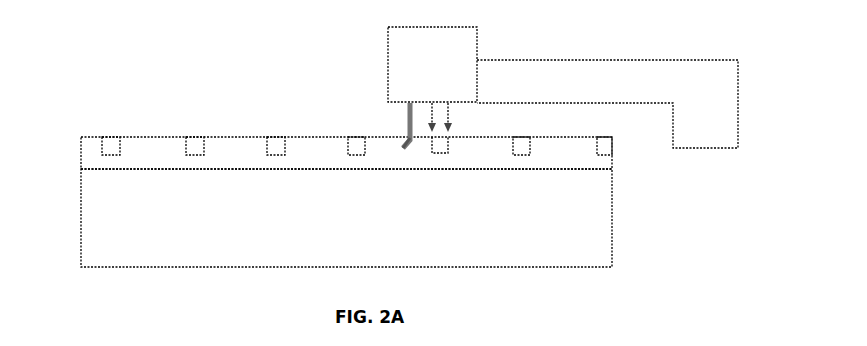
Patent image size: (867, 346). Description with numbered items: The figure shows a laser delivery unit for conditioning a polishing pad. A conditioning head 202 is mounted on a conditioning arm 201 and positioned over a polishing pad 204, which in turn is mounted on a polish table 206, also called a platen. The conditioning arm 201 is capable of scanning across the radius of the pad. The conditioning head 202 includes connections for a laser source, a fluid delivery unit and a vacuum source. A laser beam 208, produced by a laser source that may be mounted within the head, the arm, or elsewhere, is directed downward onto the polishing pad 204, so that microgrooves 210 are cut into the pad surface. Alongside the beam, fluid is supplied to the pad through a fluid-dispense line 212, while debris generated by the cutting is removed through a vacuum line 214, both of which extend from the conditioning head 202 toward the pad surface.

The conditioning arm 201 is at (607, 104).
The conditioning head 202 is at (432, 64).
The polishing pad 204 is at (158, 148).
The polish table 206 is at (346, 218).
The laser beam 208 is at (407, 121).
The microgrooves 210 is at (402, 148).
The fluid-dispense line 212 is at (450, 113).
The vacuum line 214 is at (452, 124).